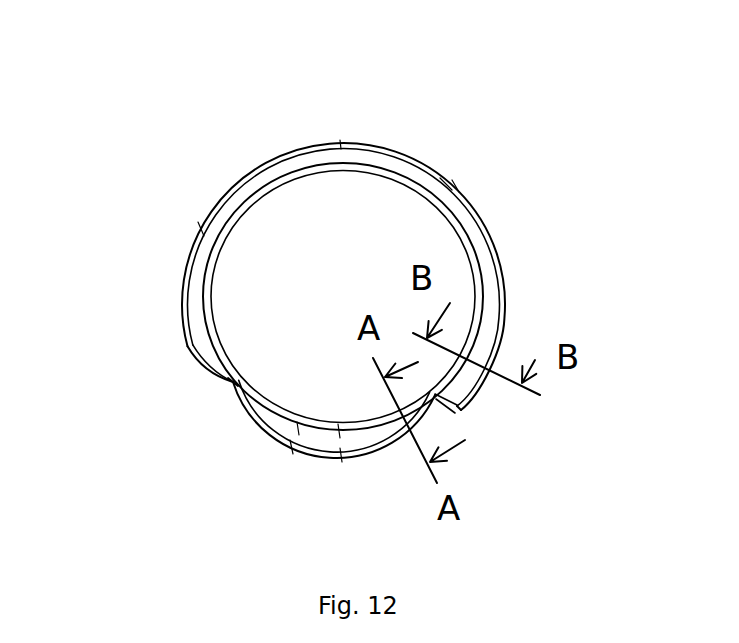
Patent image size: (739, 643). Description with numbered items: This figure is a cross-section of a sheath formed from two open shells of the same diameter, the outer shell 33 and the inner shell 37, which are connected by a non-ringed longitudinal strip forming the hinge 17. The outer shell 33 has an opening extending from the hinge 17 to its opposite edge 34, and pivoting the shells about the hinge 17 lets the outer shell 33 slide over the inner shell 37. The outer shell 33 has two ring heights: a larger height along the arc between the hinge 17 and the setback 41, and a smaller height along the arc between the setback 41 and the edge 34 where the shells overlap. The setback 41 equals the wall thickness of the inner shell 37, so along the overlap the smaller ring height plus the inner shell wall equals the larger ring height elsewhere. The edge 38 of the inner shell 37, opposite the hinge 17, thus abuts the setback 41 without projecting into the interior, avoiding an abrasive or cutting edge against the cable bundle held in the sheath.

The hinge 17 is at (232, 383).
The outer shell 33 is at (342, 448).
The edge of the shell 34 is at (343, 173).
The inner shell 37 is at (208, 233).
The edge 38 is at (456, 406).
The setback 41 is at (438, 398).